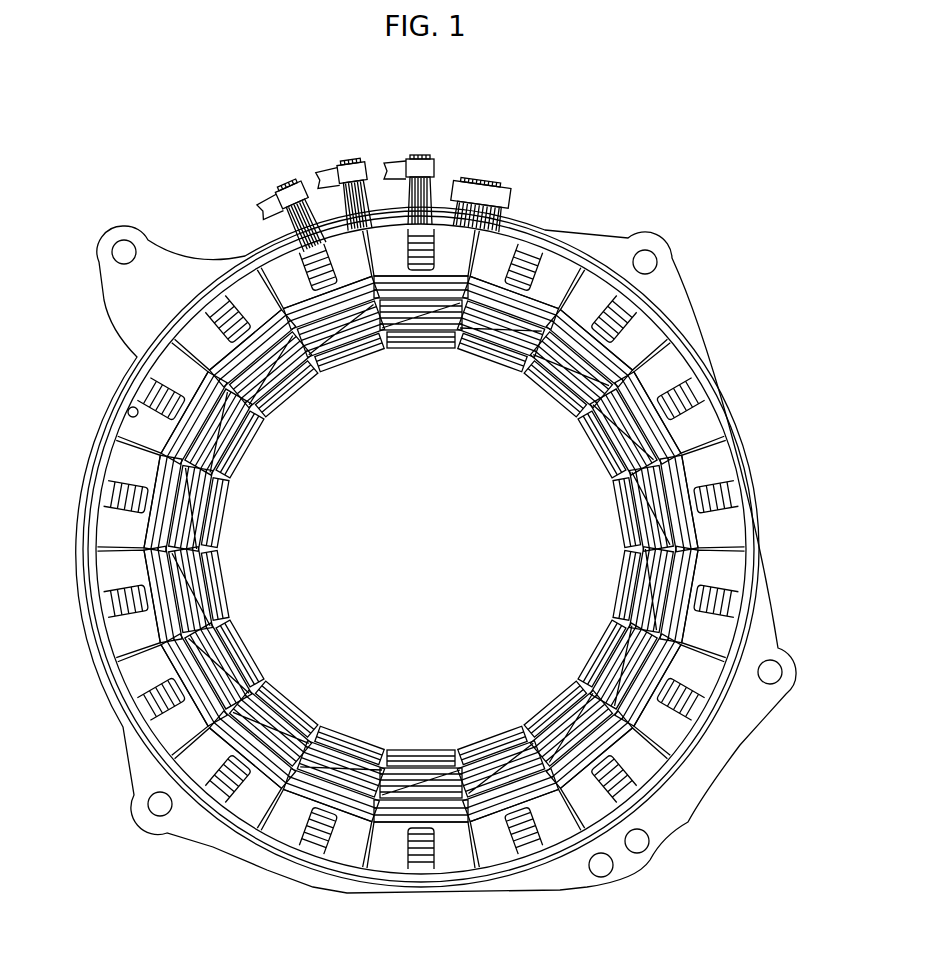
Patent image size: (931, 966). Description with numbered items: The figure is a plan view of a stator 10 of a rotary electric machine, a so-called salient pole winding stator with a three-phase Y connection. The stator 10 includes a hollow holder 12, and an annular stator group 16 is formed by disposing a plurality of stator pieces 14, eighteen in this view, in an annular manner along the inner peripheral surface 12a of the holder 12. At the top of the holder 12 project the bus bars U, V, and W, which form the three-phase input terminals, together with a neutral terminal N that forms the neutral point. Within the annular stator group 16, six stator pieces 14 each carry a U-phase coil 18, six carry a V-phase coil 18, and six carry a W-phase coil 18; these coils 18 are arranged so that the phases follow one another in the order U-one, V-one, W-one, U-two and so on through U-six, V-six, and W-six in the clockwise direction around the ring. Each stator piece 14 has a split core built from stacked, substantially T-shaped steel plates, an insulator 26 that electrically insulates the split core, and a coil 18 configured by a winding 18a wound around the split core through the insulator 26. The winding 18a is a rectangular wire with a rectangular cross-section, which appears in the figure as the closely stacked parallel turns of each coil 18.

The stator 10 is at (668, 180).
The holder 12 is at (132, 292).
The inner peripheral surface 12a is at (135, 408).
The stator piece 14 is at (724, 412).
The annular stator group 16 is at (749, 480).
The coil 18 is at (170, 593).
The winding 18a is at (408, 793).
The insulator 26 is at (453, 865).
The bus bar W is at (288, 190).
The bus bar V is at (355, 170).
The bus bar U is at (421, 155).
The neutral terminal N is at (479, 186).